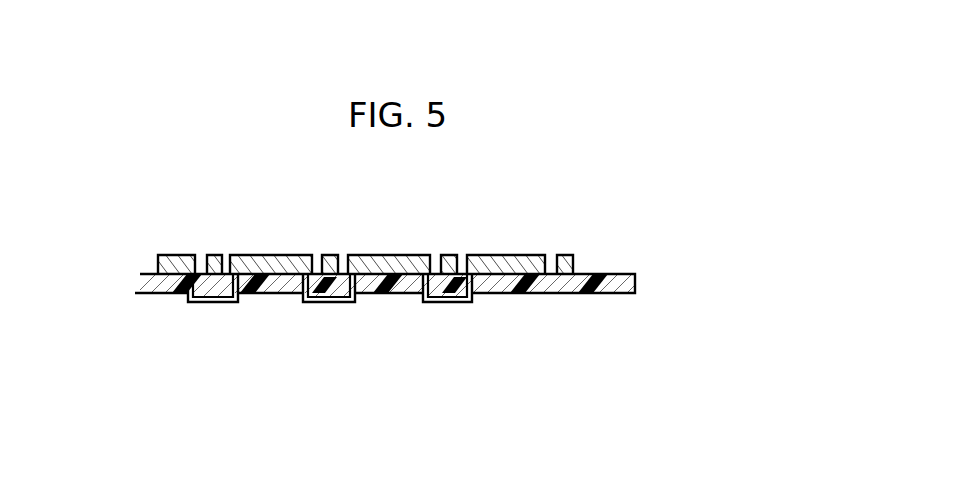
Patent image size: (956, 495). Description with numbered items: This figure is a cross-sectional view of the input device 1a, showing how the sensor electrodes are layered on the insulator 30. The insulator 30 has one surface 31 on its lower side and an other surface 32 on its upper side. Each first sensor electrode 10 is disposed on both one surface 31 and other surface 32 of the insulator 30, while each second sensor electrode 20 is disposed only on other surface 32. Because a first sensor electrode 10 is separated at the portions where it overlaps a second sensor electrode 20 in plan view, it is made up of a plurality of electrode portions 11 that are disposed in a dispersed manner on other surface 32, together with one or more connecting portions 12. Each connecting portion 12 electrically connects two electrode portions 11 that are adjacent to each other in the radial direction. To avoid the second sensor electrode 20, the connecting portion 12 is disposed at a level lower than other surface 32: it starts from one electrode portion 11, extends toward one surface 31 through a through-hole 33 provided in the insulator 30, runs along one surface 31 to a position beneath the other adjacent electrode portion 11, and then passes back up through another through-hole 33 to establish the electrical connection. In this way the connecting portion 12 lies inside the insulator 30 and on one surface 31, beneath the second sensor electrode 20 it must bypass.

The electronic component 1a is at (635, 218).
The first sensor electrode 10 is at (418, 355).
The electrode portion 11 is at (395, 272).
The connecting portion 12 is at (342, 303).
The second sensor electrode 20 is at (566, 261).
The insulator 30 is at (633, 282).
The one surface 31 is at (507, 280).
The other surface 32 is at (503, 270).
The through-hole 33 is at (197, 285).